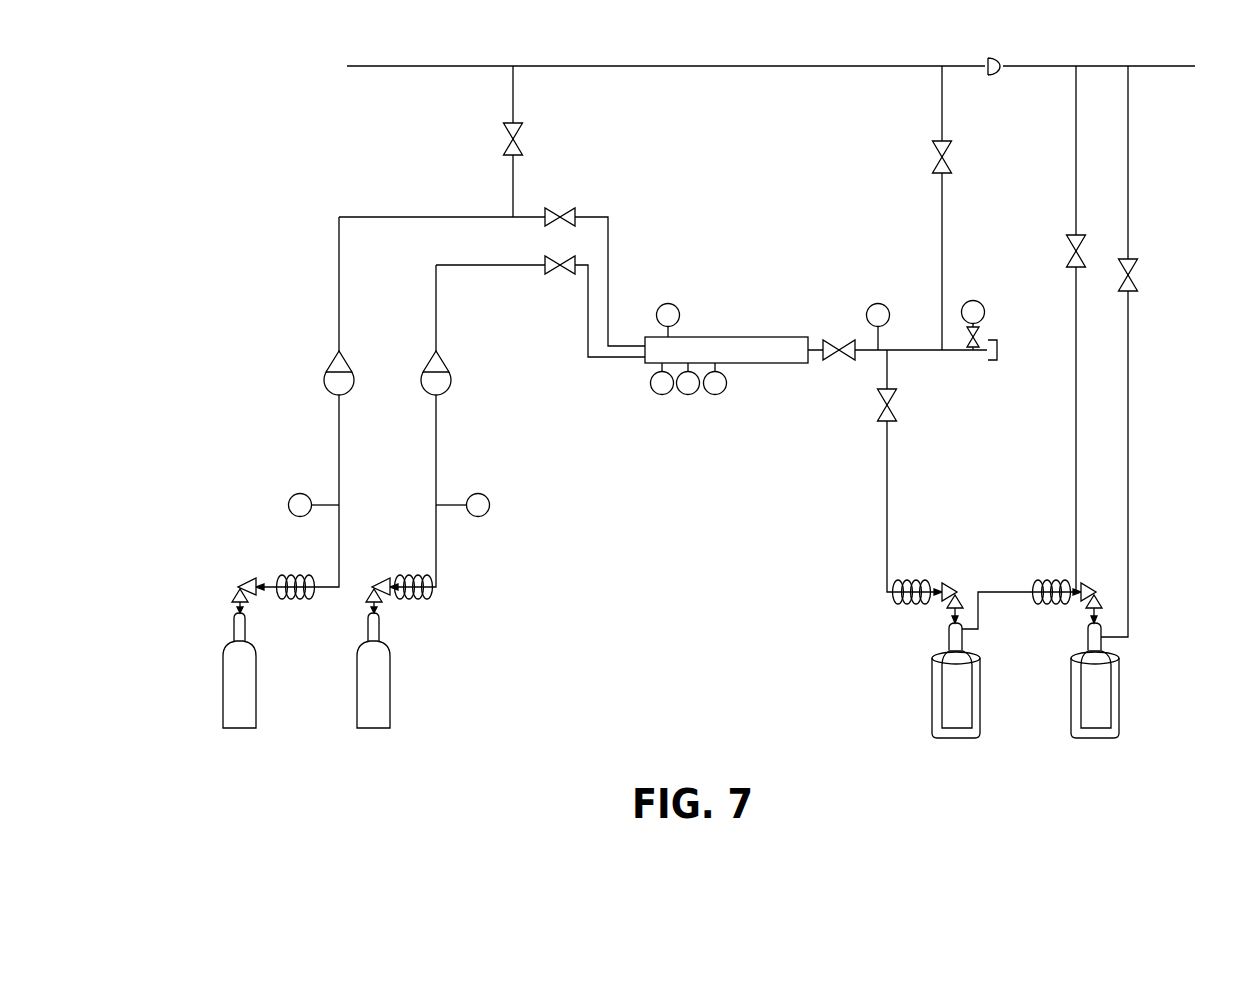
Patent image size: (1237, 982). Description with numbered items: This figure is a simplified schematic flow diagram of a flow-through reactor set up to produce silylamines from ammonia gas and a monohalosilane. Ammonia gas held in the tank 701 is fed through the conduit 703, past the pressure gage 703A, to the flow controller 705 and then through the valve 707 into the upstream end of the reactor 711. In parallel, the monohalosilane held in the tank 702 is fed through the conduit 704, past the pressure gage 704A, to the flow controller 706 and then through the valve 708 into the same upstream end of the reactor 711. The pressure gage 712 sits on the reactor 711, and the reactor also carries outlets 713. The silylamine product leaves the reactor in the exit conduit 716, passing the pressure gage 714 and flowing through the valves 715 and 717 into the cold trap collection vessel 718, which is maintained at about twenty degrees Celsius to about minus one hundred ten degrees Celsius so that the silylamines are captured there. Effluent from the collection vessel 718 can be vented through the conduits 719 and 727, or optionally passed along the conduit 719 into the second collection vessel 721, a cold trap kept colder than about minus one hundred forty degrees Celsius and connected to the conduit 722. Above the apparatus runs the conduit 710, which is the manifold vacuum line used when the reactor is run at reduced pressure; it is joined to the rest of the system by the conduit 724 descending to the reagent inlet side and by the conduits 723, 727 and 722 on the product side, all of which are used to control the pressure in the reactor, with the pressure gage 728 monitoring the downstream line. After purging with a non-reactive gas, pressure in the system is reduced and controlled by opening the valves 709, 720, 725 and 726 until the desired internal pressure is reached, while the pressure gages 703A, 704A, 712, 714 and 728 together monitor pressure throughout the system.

The tank 701 is at (223, 680).
The tank 702 is at (390, 688).
The conduit 703 is at (338, 538).
The pressure gage 703A is at (289, 508).
The conduit 704 is at (437, 542).
The pressure gage 704A is at (490, 507).
The flow controller 705 is at (327, 383).
The flow controller 706 is at (445, 382).
The valve 707 is at (576, 214).
The valve 708 is at (577, 263).
The valve 709 is at (517, 136).
The manifold vacuum line 710 is at (708, 67).
The reactor 711 is at (736, 338).
The pressure gage 712 is at (672, 305).
The outlet ports 713 is at (715, 395).
The pressure gage 714 is at (883, 304).
The valve 715 is at (839, 362).
The conduit 716 is at (868, 350).
The valve 717 is at (897, 408).
The cold trap collection vessel 718 is at (932, 693).
The conduit 719 is at (1005, 592).
The valve 720 is at (950, 147).
The collection vessel 721 is at (1118, 697).
The conduit 722 is at (1129, 350).
The conduit 723 is at (945, 222).
The conduit 724 is at (517, 178).
The valve 725 is at (1084, 246).
The valve 726 is at (1136, 268).
The conduit 727 is at (1077, 453).
The pressure gage 728 is at (984, 304).